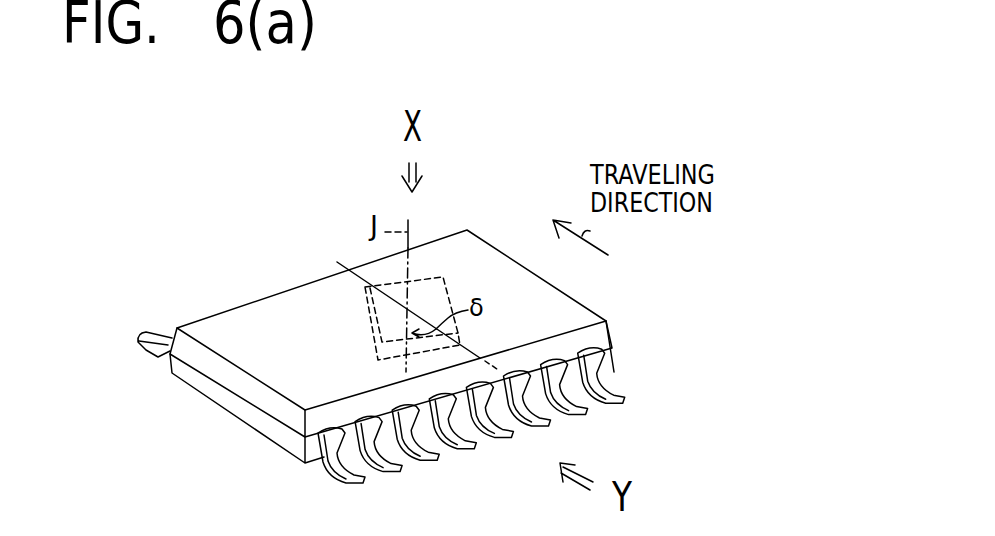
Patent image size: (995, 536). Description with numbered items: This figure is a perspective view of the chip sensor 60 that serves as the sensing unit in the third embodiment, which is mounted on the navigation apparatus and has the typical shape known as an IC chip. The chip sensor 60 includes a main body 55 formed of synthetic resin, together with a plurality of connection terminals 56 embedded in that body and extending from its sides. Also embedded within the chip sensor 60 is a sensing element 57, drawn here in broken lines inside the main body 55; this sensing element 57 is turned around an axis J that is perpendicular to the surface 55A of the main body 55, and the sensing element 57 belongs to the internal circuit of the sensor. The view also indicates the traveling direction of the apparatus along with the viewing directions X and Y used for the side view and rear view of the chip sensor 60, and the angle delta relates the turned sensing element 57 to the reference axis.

The main body 55 is at (277, 446).
The surface of the main body 55A is at (595, 312).
The connection terminals 56 is at (614, 380).
The sensing element 57 is at (437, 274).
The chip sensor 60 is at (275, 285).